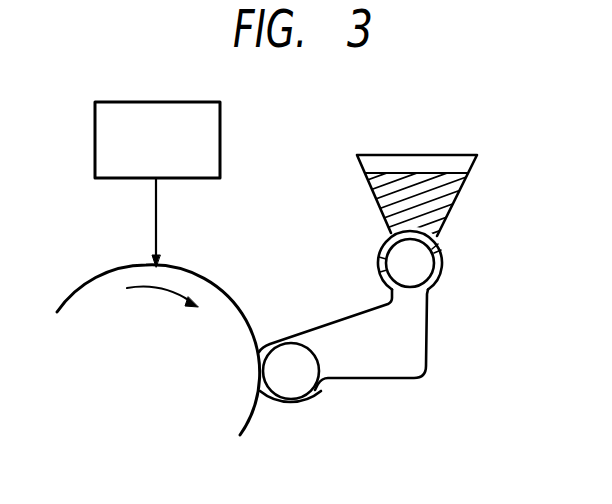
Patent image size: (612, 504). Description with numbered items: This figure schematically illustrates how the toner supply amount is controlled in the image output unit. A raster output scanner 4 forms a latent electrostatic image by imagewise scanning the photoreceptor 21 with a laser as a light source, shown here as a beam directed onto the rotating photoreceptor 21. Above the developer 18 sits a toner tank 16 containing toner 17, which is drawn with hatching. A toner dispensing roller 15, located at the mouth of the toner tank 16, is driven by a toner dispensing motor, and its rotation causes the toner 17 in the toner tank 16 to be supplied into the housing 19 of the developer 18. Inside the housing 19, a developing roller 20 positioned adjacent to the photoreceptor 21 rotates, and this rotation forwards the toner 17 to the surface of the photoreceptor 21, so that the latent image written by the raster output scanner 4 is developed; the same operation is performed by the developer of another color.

The raster output scanner 4 is at (220, 115).
The photoreceptor 21 is at (209, 285).
The toner tank 16 is at (378, 202).
The toner 17 is at (448, 198).
The toner dispensing roller 15 is at (423, 265).
The developer 18 is at (426, 323).
The housing 19 is at (387, 368).
The developing roller 20 is at (292, 386).